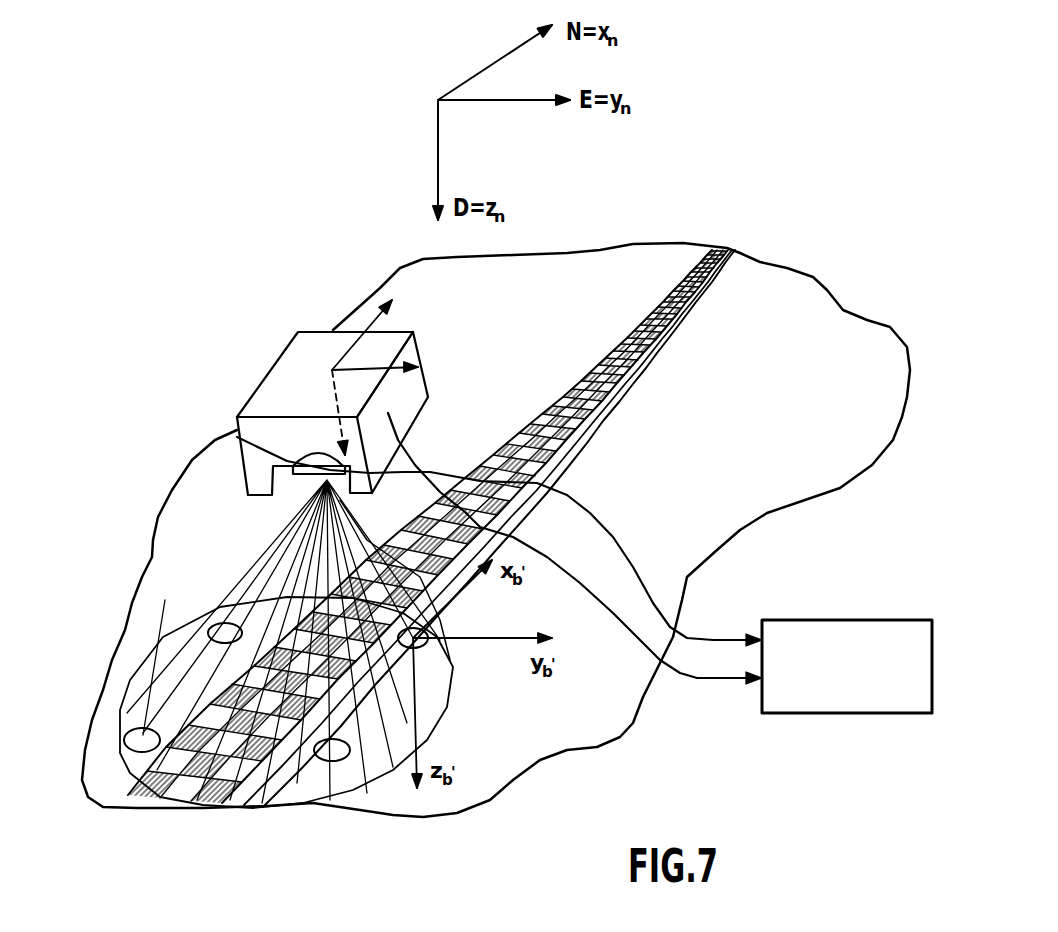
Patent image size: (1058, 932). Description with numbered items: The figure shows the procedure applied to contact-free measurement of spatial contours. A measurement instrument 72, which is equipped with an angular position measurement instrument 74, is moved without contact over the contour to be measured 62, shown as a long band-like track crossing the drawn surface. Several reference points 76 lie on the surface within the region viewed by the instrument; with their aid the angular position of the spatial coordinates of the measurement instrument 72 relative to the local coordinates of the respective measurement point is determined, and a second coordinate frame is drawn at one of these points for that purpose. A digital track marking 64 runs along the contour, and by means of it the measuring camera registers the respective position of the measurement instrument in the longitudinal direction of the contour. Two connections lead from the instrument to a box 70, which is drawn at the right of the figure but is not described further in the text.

The contour to be measured 62 is at (680, 345).
The digital track marking 64 is at (588, 423).
The computer 70 is at (838, 638).
The measurement instrument 72 is at (288, 378).
The angular position measurement instrument 74 is at (238, 437).
The reference points 76 is at (213, 628).